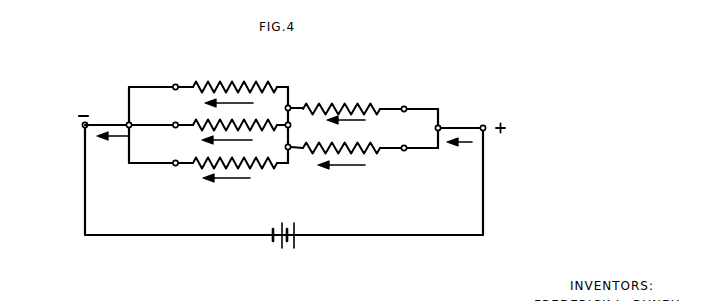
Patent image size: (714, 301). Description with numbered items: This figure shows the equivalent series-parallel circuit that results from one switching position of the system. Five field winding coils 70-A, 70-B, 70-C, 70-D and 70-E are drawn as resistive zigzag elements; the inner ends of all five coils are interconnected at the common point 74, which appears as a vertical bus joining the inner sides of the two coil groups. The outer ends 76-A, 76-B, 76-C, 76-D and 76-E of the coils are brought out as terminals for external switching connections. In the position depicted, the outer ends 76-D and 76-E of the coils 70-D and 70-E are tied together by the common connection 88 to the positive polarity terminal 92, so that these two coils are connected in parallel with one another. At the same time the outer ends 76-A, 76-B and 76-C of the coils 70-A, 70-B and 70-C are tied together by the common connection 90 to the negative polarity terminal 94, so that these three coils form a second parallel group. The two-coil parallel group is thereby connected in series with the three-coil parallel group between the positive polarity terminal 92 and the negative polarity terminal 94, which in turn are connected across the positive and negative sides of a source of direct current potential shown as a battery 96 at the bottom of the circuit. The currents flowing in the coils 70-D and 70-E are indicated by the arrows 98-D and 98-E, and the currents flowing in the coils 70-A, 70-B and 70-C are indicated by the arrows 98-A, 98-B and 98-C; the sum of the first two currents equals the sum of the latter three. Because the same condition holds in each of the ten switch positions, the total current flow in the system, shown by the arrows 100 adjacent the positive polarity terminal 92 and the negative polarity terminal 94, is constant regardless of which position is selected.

The field winding coil 70-A is at (243, 83).
The field winding coil 70-B is at (257, 121).
The field winding coil 70-C is at (255, 160).
The field winding coil 70-D is at (345, 102).
The field winding coil 70-E is at (348, 142).
The interconnection of inner ends 74 is at (290, 95).
The outer end of coil 76-A is at (176, 84).
The outer end of coil 76-B is at (176, 122).
The outer end of coil 76-C is at (176, 160).
The outer end of coil 76-D is at (406, 106).
The outer end of coil 76-E is at (405, 151).
The common connection 88 is at (440, 110).
The common connection 90 is at (128, 150).
The positive polarity terminal 92 is at (486, 125).
The negative polarity terminal 94 is at (82, 127).
The battery 96 is at (285, 249).
The current arrow 98-A is at (237, 105).
The current arrow 98-B is at (225, 142).
The current arrow 98-C is at (236, 180).
The current arrow 98-D is at (344, 122).
The current arrow 98-E is at (349, 167).
The current flow arrow 100 is at (110, 138).